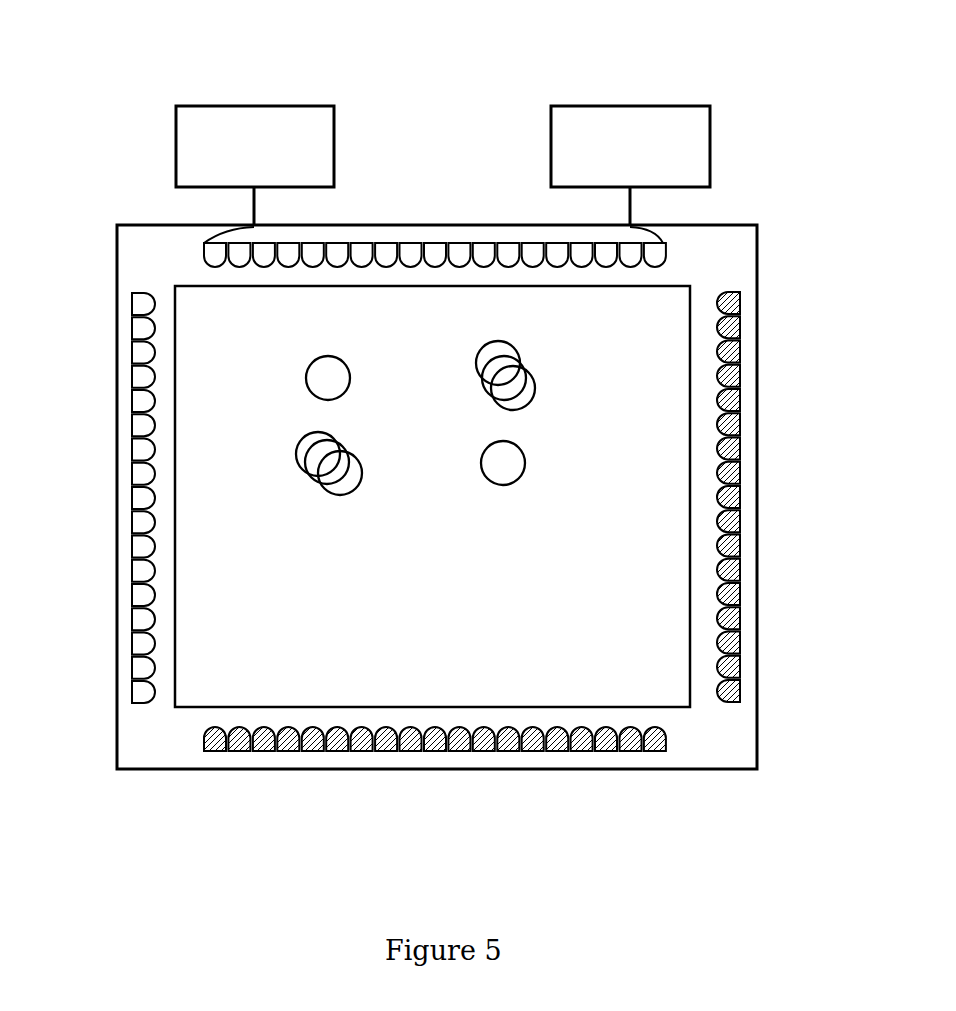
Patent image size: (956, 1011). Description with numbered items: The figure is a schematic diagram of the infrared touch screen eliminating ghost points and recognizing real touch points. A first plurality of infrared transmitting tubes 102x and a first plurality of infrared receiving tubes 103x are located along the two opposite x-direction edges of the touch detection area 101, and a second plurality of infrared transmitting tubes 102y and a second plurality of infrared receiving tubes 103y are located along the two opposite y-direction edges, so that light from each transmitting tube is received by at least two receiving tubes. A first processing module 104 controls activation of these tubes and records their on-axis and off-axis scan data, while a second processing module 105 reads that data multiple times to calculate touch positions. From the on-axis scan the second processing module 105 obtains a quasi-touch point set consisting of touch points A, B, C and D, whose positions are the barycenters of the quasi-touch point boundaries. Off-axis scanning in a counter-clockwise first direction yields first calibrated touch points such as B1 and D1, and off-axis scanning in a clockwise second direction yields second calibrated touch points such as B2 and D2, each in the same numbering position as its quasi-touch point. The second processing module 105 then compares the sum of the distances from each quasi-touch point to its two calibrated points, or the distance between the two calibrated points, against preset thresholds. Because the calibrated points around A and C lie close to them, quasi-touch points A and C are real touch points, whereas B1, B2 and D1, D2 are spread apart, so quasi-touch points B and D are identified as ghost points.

The touch detection area 101 is at (670, 708).
The first plurality of infrared transmitting tubes 102x is at (666, 243).
The second plurality of infrared transmitting tubes 102y is at (132, 297).
The first plurality of infrared receiving tubes 103x is at (666, 751).
The second plurality of infrared receiving tubes 103y is at (742, 295).
The first processing module 104 is at (257, 106).
The second processing module 105 is at (631, 106).
The quasi-touch point A is at (328, 378).
The quasi-touch point B is at (504, 378).
The first calibrated touch point B1 is at (493, 350).
The second calibrated touch point B2 is at (522, 402).
The quasi-touch point C is at (503, 463).
The quasi-touch point D is at (327, 462).
The first calibrated touch point D1 is at (351, 487).
The second calibrated touch point D2 is at (300, 450).